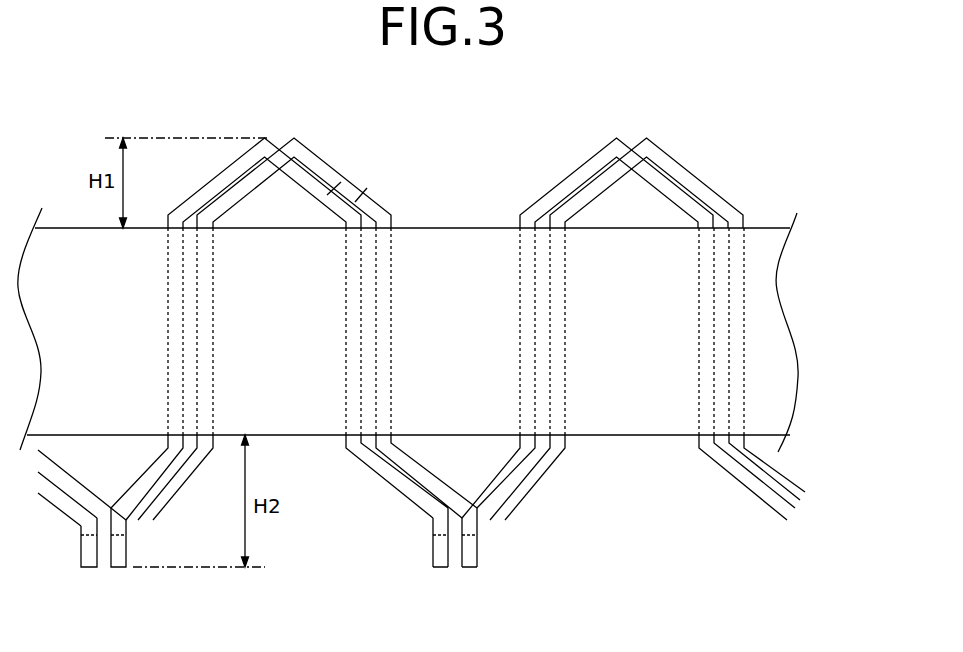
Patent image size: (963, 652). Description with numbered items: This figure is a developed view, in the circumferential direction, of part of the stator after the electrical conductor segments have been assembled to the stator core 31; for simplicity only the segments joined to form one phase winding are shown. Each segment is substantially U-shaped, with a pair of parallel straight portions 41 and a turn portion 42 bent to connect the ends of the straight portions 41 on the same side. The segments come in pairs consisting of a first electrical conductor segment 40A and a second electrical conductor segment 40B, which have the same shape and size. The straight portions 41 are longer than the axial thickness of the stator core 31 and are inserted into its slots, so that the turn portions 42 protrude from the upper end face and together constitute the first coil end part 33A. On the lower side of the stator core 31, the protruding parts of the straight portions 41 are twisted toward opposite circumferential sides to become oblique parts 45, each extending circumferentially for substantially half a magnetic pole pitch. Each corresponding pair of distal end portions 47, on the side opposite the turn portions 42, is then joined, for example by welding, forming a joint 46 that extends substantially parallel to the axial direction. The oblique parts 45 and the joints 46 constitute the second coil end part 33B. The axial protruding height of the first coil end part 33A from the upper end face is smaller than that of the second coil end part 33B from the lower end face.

The stator core 31 is at (627, 437).
The first coil end part 33A is at (805, 138).
The second coil end part 33B is at (805, 437).
The first electrical conductor segment 40A is at (233, 162).
The second electrical conductor segment 40B is at (323, 162).
The straight portion 41 is at (390, 270).
The turn portion 42 is at (333, 180).
The oblique part 45 is at (428, 478).
The joint 46 is at (470, 567).
The distal end portion 47 is at (433, 547).